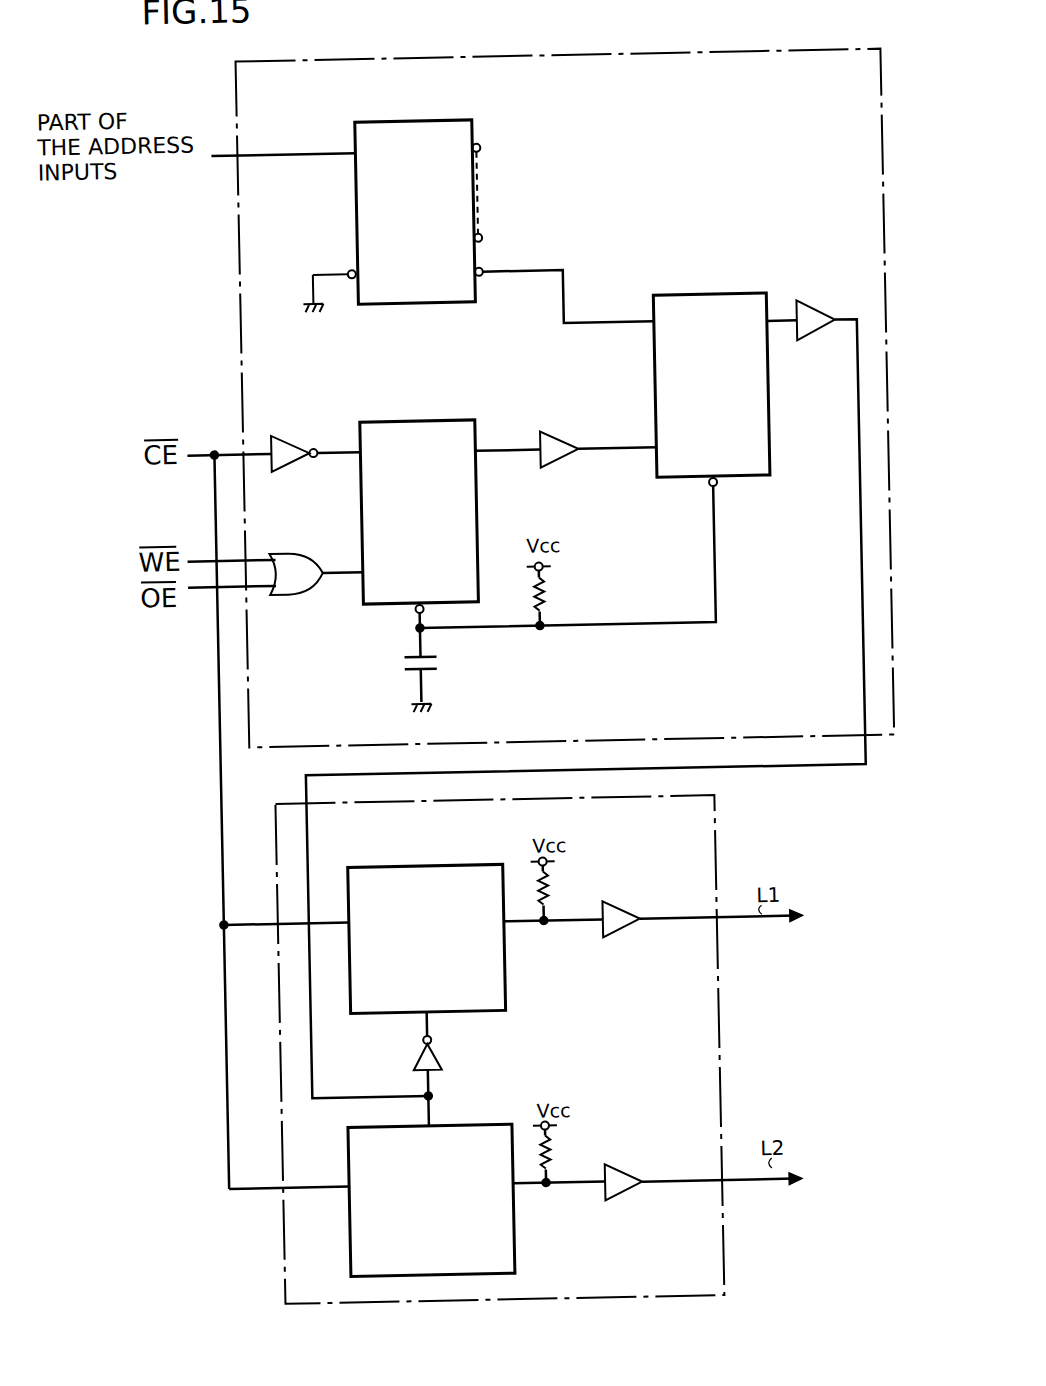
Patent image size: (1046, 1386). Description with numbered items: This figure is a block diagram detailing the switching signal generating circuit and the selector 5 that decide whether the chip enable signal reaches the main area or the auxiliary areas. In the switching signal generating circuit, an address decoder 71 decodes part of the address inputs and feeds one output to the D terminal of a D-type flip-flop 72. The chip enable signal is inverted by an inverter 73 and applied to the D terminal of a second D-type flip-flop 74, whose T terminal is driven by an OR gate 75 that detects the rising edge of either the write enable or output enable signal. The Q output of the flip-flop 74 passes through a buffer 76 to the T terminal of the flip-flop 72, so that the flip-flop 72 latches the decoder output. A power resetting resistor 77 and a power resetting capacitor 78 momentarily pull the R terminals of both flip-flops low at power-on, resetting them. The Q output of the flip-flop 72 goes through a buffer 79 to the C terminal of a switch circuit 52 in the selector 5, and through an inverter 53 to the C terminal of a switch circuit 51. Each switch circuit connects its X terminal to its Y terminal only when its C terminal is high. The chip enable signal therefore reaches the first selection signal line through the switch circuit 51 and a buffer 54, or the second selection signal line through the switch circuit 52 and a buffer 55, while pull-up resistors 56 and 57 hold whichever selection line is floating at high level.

The address decoder 71 is at (722, 54).
The D-type flip-flop 72 is at (707, 299).
The inverter 73 is at (292, 434).
The D-type flip-flop 74 is at (424, 420).
The OR gate 75 is at (295, 554).
The buffer 76 is at (558, 438).
The power resetting resistor 77 is at (548, 589).
The power resetting capacitor 78 is at (440, 667).
The buffer 79 is at (816, 312).
The selector 5 is at (715, 866).
The switch circuit 51 is at (409, 865).
The switch circuit 52 is at (453, 1124).
The inverter 53 is at (432, 1052).
The buffer 54 is at (617, 912).
The buffer 55 is at (610, 1168).
The pull-up resistor 56 is at (543, 880).
The pull-up resistor 57 is at (542, 1139).